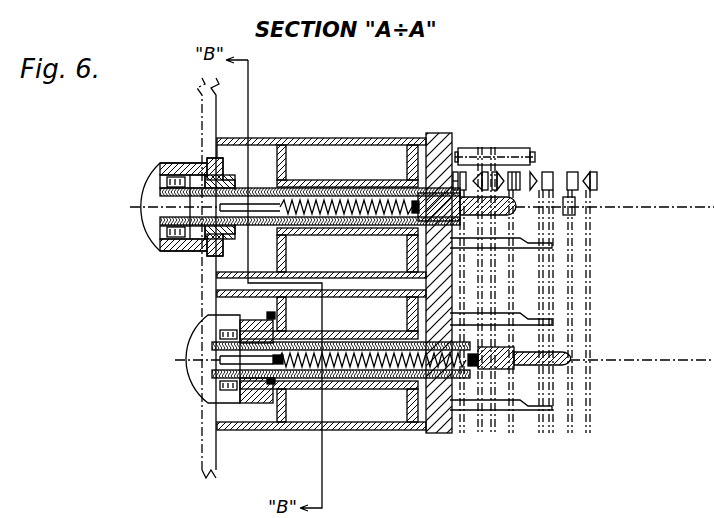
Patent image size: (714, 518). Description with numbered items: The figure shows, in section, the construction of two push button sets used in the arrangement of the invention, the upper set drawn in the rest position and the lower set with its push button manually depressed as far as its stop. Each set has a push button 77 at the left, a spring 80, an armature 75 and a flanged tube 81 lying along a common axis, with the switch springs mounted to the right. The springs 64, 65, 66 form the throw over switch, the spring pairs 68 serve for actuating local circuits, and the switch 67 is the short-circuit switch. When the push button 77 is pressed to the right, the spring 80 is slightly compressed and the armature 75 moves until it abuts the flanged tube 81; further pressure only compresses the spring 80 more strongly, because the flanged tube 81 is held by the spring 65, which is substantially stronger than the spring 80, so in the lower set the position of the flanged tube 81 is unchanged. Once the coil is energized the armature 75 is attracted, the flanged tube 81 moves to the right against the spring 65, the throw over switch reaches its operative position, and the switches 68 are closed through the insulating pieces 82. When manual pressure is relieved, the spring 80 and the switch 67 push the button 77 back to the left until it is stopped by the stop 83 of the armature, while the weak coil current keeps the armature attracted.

The push button 77 is at (157, 185).
The armature 75 is at (233, 187).
The spring 80 is at (167, 233).
The stop 83 is at (252, 398).
The flanged tube 81 is at (438, 140).
The spring 64 is at (453, 172).
The insulating pieces 82 is at (482, 173).
The spring 65 is at (460, 165).
The spring 66 is at (483, 157).
The switch 67 is at (584, 172).
The spring pairs 68 is at (575, 205).